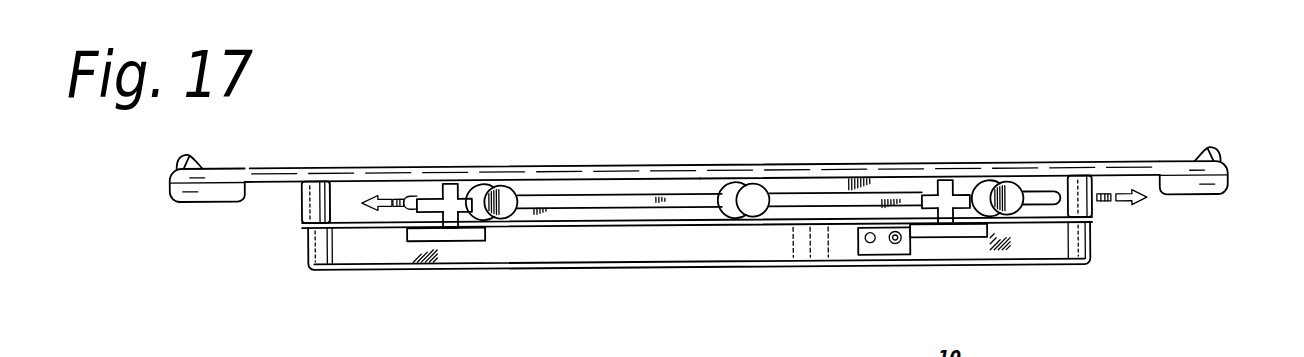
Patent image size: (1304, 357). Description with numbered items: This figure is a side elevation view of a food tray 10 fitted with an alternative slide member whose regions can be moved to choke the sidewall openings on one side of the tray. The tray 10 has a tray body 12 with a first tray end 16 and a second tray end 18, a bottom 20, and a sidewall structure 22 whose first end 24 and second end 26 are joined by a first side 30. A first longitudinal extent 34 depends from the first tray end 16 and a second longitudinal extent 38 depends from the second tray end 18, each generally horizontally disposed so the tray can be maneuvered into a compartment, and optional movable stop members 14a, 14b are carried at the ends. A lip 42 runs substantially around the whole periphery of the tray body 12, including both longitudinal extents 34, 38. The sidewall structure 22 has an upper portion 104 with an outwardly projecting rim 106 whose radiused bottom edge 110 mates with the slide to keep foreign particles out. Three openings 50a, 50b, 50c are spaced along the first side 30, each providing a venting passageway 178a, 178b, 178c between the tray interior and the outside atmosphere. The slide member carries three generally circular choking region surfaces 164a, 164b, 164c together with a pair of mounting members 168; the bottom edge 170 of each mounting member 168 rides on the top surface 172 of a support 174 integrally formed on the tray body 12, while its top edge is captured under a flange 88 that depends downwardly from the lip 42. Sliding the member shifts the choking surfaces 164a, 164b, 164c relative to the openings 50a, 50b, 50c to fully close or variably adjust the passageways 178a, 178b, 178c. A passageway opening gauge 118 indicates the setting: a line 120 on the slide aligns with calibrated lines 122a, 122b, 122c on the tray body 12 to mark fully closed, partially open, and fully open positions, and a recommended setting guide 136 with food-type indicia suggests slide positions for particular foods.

The food tray 10 is at (1007, 78).
The tray body 12 is at (580, 251).
The movable stop member 14a is at (183, 154).
The movable stop member 14b is at (1213, 152).
The first tray end 16 is at (180, 186).
The second tray end 18 is at (1210, 182).
The bottom 20 is at (338, 267).
The sidewall structure 22 is at (1088, 241).
The first end 24 is at (300, 222).
The second end 26 is at (1092, 229).
The first side 30 is at (333, 243).
The first longitudinal extent 34 is at (258, 165).
The second longitudinal extent 38 is at (1137, 165).
The lip 42 is at (303, 171).
The opening 50a is at (482, 186).
The opening 50b is at (740, 186).
The opening 50c is at (980, 186).
The flange 88 is at (652, 166).
The upper portion 104 is at (343, 190).
The outwardly projecting rim 106 is at (379, 193).
The radiused bottom edge 110 is at (387, 221).
The passageway opening gauge 118 is at (530, 222).
The line 120 is at (822, 178).
The calibrated line 122a is at (792, 229).
The calibrated line 122b is at (810, 242).
The calibrated line 122c is at (830, 236).
The recommended setting guide 136 is at (883, 250).
The choking region surface 164a is at (512, 184).
The choking region surface 164b is at (757, 186).
The choking region surface 164c is at (1000, 200).
The mounting member 168 is at (445, 192).
The bottom edge 170 is at (433, 225).
The top surface 172 is at (477, 183).
The support 174 is at (437, 233).
The passageway 178a is at (495, 183).
The passageway 178b is at (732, 183).
The passageway 178c is at (990, 178).